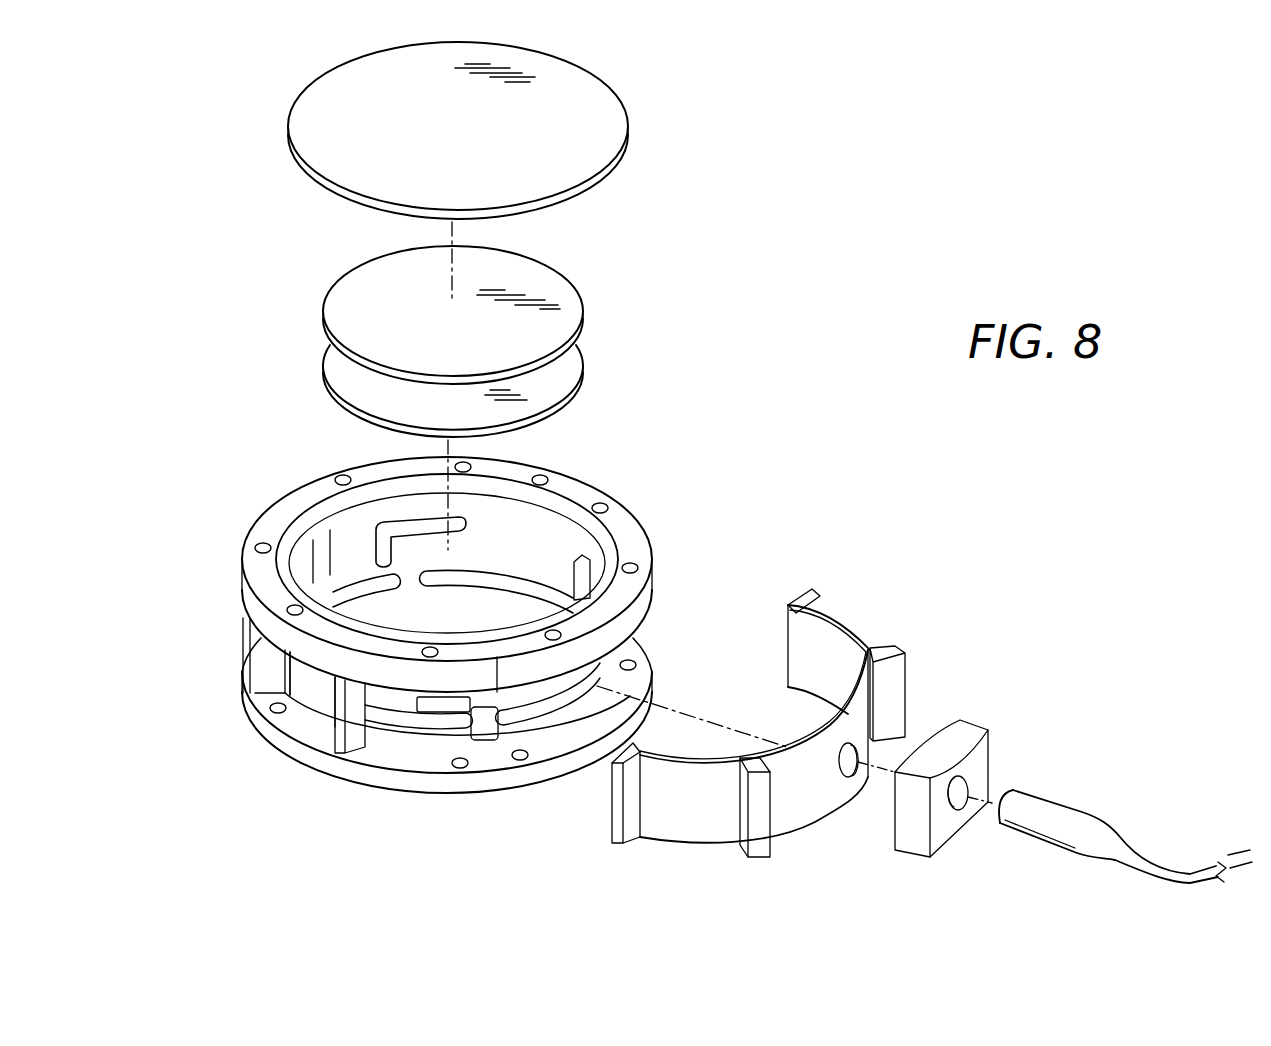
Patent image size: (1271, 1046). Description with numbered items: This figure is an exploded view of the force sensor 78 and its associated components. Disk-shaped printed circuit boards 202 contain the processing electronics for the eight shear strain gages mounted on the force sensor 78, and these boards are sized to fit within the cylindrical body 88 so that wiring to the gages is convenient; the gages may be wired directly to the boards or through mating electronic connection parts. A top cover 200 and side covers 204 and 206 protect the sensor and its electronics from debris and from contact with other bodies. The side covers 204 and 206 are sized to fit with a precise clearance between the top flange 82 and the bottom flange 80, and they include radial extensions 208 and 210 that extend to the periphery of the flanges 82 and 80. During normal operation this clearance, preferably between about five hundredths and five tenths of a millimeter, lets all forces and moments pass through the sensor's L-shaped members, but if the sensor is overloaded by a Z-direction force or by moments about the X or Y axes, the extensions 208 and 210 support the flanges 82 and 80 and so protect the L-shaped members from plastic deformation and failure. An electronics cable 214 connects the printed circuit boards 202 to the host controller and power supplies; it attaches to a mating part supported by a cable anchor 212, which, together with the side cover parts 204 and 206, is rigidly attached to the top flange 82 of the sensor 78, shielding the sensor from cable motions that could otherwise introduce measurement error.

The force sensor 78 is at (630, 502).
The bottom flange 80 is at (407, 713).
The top flange 82 is at (262, 613).
The cylindrical body 88 is at (408, 587).
The top cover 200 is at (578, 80).
The printed circuit boards 202 is at (595, 356).
The side cover 204 is at (740, 779).
The side cover 206 is at (317, 705).
The radial extension 208 is at (910, 680).
The radial extension 210 is at (757, 843).
The cable anchor 212 is at (980, 727).
The electronics cable 214 is at (1083, 808).